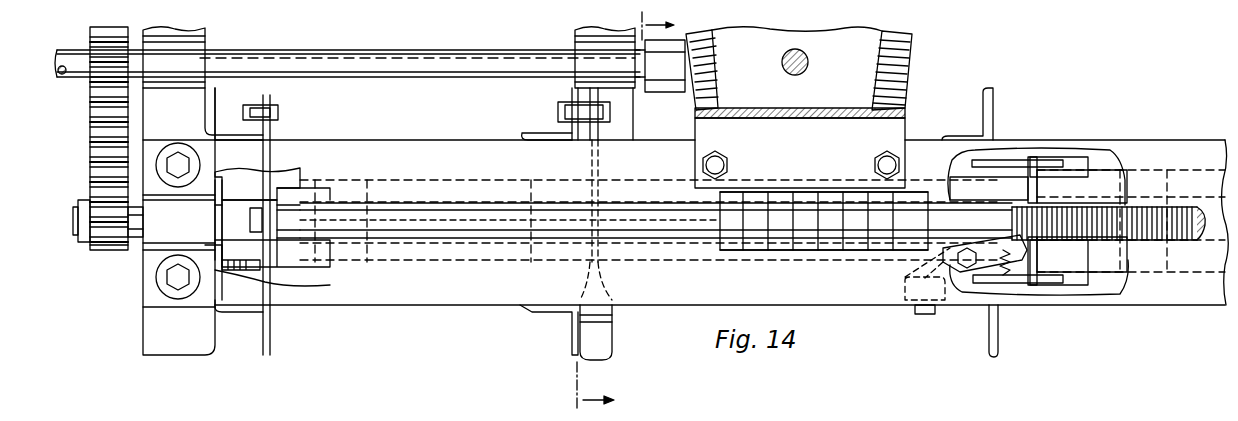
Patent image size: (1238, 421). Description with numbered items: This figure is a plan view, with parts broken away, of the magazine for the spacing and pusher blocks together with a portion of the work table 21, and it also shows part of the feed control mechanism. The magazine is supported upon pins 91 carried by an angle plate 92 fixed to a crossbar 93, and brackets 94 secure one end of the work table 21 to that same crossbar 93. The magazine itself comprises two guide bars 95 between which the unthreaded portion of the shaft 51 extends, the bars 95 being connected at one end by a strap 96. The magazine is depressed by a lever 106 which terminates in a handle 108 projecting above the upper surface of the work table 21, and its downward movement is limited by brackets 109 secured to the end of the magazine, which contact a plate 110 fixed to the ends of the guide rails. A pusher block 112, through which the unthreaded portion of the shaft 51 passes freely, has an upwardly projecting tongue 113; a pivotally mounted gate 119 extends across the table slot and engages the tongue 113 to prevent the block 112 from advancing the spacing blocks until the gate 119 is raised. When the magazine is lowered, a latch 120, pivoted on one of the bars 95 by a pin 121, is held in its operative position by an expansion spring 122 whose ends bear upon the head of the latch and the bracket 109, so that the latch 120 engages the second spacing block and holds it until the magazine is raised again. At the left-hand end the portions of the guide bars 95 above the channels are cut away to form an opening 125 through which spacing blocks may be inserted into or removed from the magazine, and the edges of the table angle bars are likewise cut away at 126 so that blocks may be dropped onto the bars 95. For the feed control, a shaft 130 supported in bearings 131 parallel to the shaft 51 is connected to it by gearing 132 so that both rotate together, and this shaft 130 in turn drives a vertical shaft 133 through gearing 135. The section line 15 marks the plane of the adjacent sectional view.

The section line 15- 15 is at (640, 25).
The work table 21 is at (502, 284).
The shaft 51 is at (710, 212).
The pins 91 is at (242, 272).
The angle plate 92 is at (165, 262).
The crossbar 93 is at (162, 346).
The brackets 94 is at (218, 112).
The guide bars 95 is at (966, 185).
The strap 96 is at (217, 285).
The lever 106 is at (588, 130).
The handle 108 is at (616, 336).
The brackets 109 is at (1012, 160).
The plate 110 is at (1085, 165).
The pusher block 112 is at (250, 222).
The tongue 113 is at (318, 163).
The gate 119 is at (282, 330).
The latch 120 is at (1032, 184).
The pin 121 is at (962, 292).
The expansion spring 122 is at (1012, 272).
The opening 125 is at (322, 198).
The cut-away 126 is at (842, 192).
The shaft 130 is at (378, 58).
The bearings 131 is at (192, 62).
The gearing 132 is at (95, 128).
The vertical shaft 133 is at (812, 70).
The gearing 135 is at (730, 80).